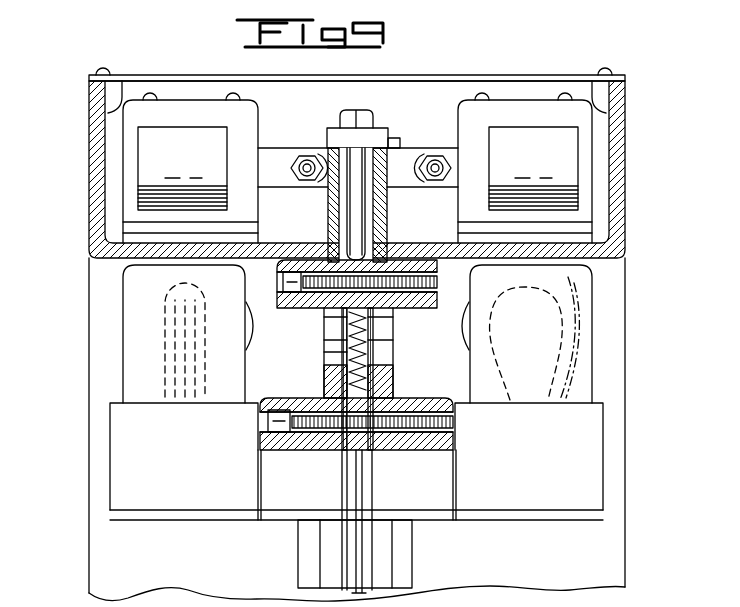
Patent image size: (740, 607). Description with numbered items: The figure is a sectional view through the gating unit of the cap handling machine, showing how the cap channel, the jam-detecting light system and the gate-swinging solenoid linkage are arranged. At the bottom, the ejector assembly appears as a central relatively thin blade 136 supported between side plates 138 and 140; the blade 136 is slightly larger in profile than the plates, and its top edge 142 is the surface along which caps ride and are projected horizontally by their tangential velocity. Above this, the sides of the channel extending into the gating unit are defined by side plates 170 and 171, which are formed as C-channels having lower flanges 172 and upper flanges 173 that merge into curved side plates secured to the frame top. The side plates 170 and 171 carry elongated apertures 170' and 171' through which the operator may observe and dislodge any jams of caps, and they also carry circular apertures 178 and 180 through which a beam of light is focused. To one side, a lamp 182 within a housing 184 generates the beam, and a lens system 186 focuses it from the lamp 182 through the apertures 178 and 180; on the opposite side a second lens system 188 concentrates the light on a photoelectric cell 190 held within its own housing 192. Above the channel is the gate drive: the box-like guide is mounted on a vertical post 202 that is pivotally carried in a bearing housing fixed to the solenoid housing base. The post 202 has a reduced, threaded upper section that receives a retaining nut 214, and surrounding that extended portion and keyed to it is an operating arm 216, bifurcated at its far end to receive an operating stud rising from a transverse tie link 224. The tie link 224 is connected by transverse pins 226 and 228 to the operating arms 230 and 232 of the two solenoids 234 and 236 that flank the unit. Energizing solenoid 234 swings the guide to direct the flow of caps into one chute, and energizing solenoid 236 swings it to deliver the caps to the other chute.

The solenoid 234 is at (150, 146).
The solenoid 236 is at (573, 163).
The retaining nut 214 is at (345, 119).
The operating arm 216 is at (377, 127).
The transverse tie link 224 is at (404, 150).
The transverse pin 226 is at (312, 180).
The transverse pin 228 is at (452, 168).
The operating arm 230 is at (273, 190).
The operating arm 232 is at (452, 210).
The vertical post 202 is at (364, 213).
The upper flange 173 is at (277, 262).
The photoelectric cell 190 is at (165, 299).
The housing 192 is at (123, 333).
The second lens system 188 is at (257, 350).
The circular aperture 178 is at (324, 317).
The elongated aperture 170' is at (307, 345).
The side plate 170 is at (310, 375).
The circular aperture 180 is at (393, 319).
The elongated aperture 171' is at (405, 365).
The side plate 171 is at (396, 351).
The top edge 142 is at (364, 386).
The lamp 182 is at (558, 308).
The housing 184 is at (592, 345).
The lens system 186 is at (463, 352).
The lower flange 172 is at (284, 452).
The side plate 138 is at (341, 486).
The blade 136 is at (360, 491).
The side plate 140 is at (374, 508).